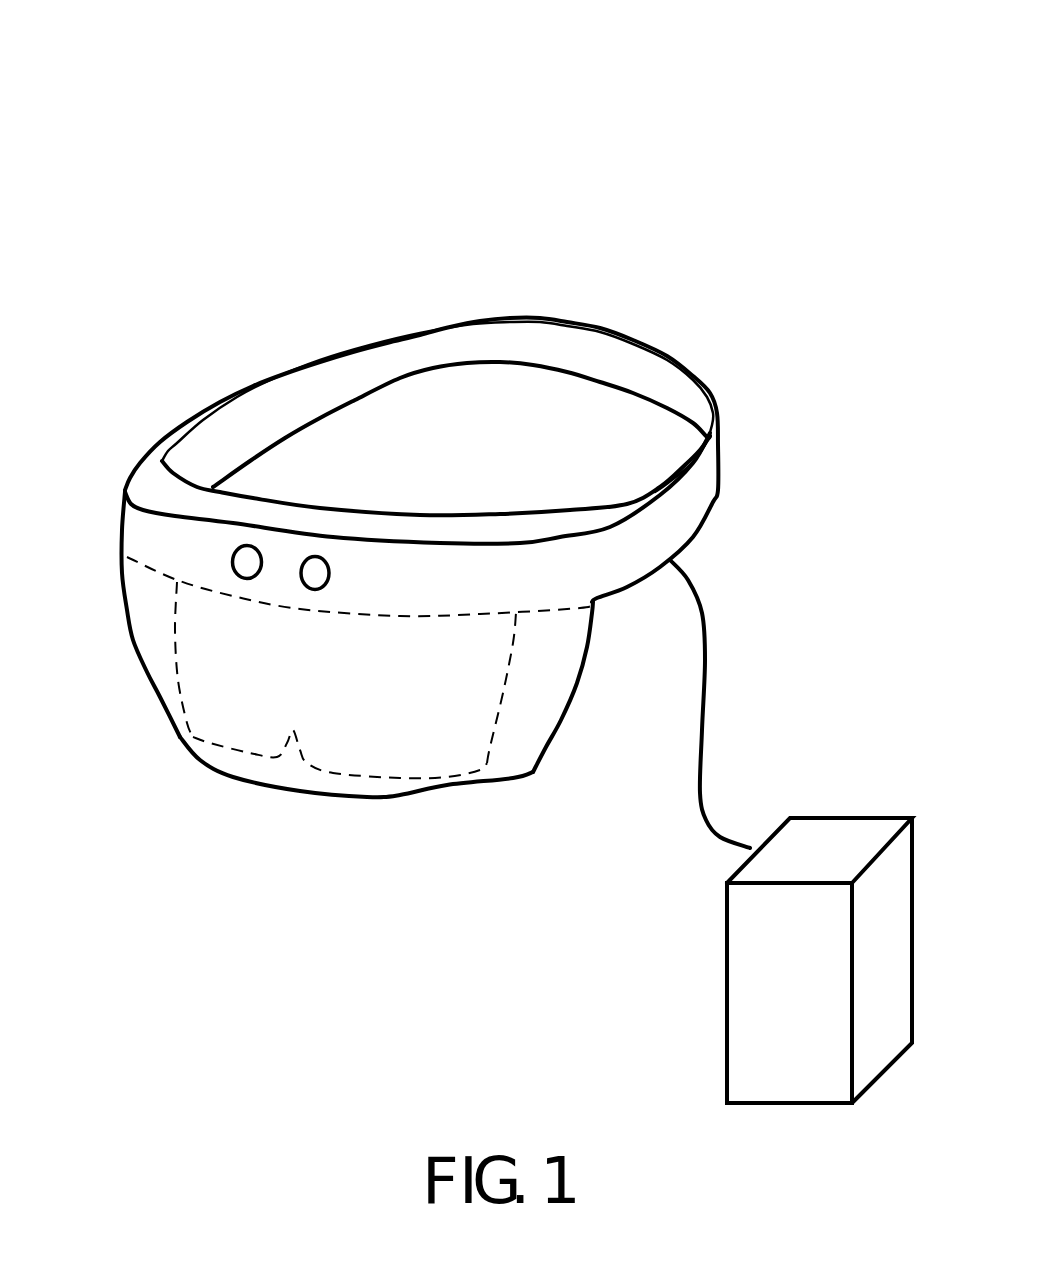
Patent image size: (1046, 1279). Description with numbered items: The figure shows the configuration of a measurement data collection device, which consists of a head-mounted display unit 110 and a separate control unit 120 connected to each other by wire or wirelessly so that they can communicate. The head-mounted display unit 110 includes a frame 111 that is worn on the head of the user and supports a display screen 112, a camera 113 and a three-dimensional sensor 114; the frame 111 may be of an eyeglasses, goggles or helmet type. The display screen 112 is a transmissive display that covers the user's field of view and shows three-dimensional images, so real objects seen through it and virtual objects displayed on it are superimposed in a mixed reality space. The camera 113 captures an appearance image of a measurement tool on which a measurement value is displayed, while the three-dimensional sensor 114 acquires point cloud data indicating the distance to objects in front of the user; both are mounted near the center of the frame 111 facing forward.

The head-mounted display unit 110 is at (501, 115).
The frame 111 is at (472, 318).
The display screen 112 is at (178, 635).
The camera 113 is at (243, 548).
The 3D sensor 114 is at (317, 550).
The control unit 120 is at (820, 817).